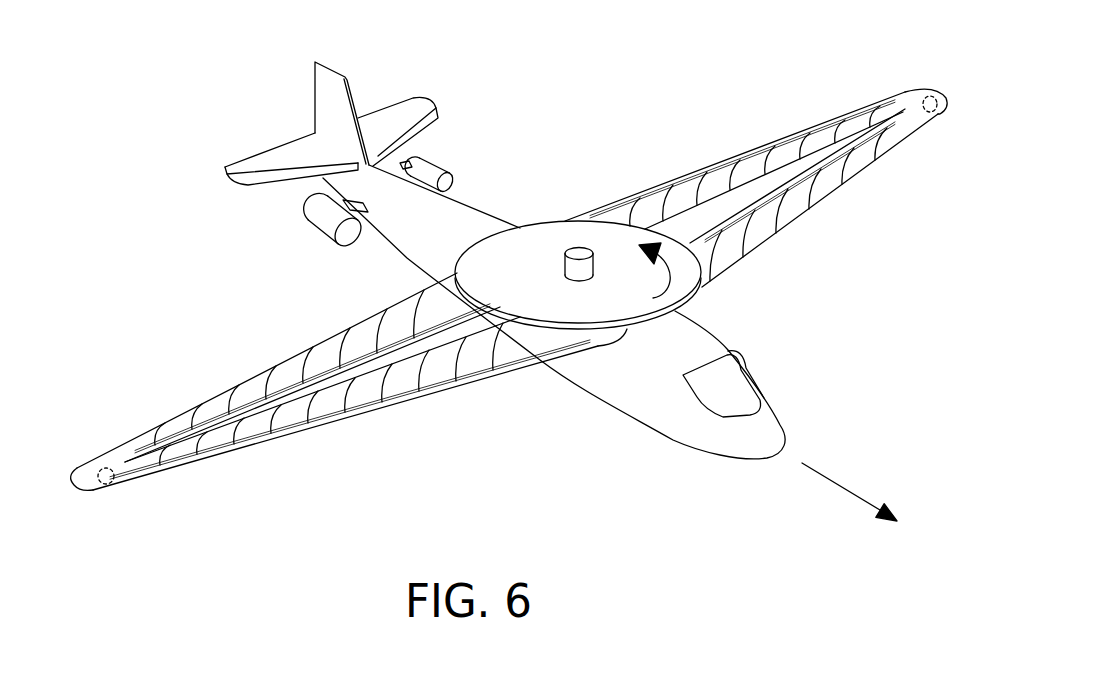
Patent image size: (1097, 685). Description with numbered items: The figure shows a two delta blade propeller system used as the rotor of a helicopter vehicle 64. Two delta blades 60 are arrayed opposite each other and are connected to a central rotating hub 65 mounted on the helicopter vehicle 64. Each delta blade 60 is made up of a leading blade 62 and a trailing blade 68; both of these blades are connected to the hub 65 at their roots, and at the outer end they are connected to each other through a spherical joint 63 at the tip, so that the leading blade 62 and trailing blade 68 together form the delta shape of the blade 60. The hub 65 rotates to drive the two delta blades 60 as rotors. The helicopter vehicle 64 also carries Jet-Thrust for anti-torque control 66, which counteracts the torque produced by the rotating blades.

The delta blade 60 is at (509, 295).
The leading blade 62 is at (802, 203).
The spherical joint 63 is at (923, 92).
The helicopter vehicle 64 is at (602, 437).
The central rotating hub 65 is at (540, 237).
The Jet-Thrust for anti-torque control 66 is at (432, 167).
The trailing blade 68 is at (707, 177).